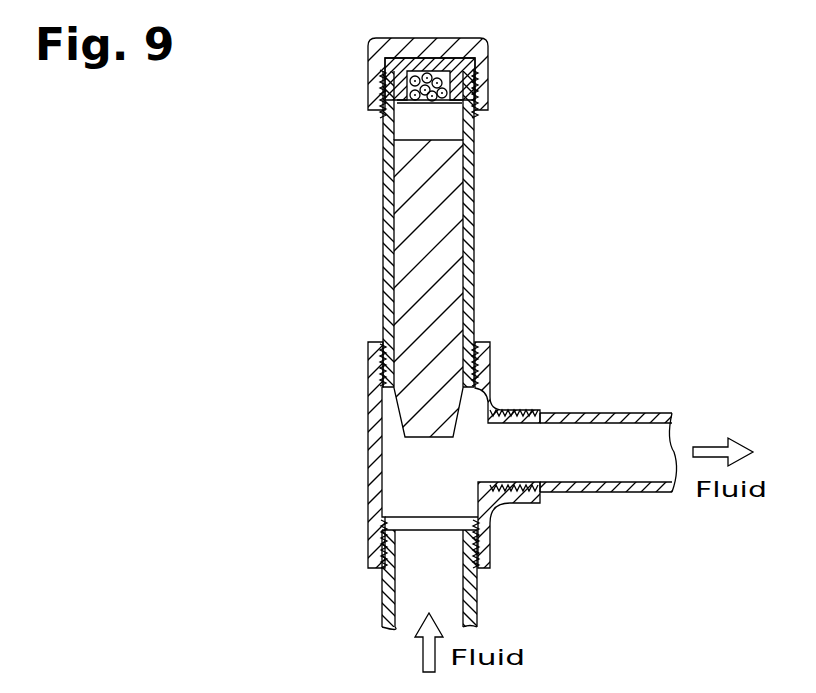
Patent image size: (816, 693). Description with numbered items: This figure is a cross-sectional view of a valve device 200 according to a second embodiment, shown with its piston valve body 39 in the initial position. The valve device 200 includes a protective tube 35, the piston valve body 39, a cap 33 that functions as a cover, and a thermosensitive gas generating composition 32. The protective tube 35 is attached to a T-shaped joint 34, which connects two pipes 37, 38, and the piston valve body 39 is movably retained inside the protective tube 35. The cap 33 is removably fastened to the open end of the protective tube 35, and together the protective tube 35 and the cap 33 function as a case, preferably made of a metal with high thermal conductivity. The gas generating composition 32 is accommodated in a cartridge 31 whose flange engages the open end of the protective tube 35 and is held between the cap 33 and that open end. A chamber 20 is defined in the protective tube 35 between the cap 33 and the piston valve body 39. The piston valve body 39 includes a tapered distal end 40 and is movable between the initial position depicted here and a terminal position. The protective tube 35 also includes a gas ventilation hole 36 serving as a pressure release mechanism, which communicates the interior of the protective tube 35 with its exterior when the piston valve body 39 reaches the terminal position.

The valve device 200 is at (626, 86).
The chamber 20 is at (450, 128).
The cartridge 31 is at (468, 61).
The thermosensitive gas generating composition 32 is at (417, 82).
The cap 33 is at (382, 43).
The T-shaped joint 34 is at (522, 405).
The protective tube 35 is at (389, 200).
The gas ventilation hole 36 is at (468, 299).
The pipe 37 is at (383, 598).
The pipe 38 is at (617, 411).
The piston valve body 39 is at (406, 254).
The tapered distal end 40 is at (397, 413).